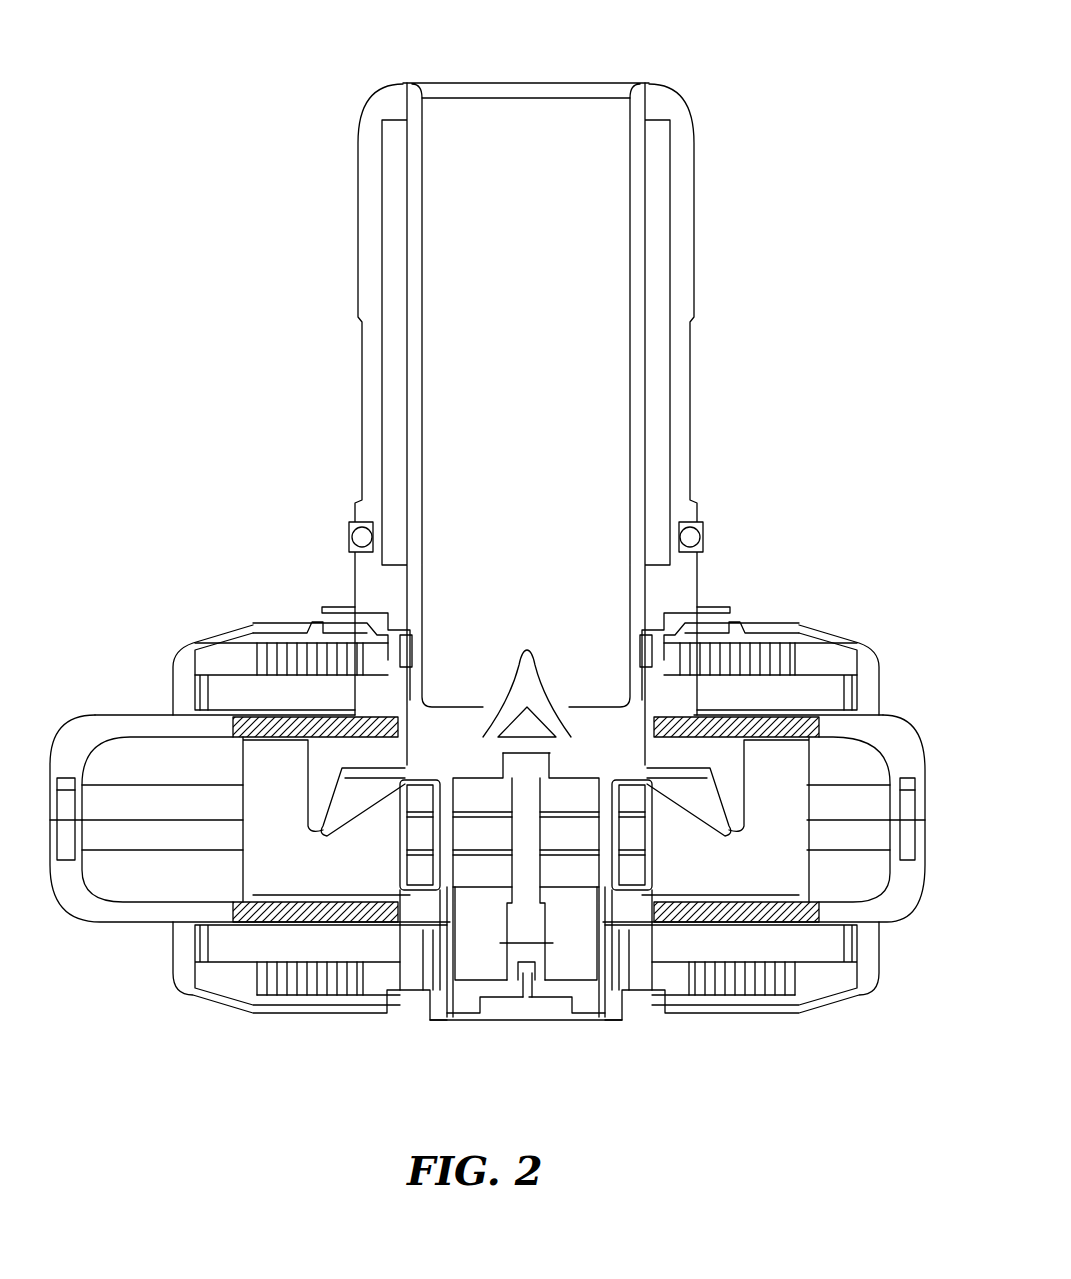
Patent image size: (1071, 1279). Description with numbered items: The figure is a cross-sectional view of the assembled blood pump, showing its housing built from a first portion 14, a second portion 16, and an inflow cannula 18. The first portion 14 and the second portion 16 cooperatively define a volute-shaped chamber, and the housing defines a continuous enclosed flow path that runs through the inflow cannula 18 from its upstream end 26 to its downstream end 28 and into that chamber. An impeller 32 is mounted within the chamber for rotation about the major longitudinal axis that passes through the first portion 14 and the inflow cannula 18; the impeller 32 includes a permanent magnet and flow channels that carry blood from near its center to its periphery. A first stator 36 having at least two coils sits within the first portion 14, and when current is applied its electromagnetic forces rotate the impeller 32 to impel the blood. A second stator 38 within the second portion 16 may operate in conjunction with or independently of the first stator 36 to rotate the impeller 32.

The first portion 14 is at (84, 922).
The second portion 16 is at (86, 715).
The inflow cannula 18 is at (694, 222).
The upstream end 26 is at (652, 88).
The downstream end 28 is at (668, 727).
The impeller 32 is at (782, 781).
The first stator 36 is at (283, 992).
The second stator 38 is at (292, 648).